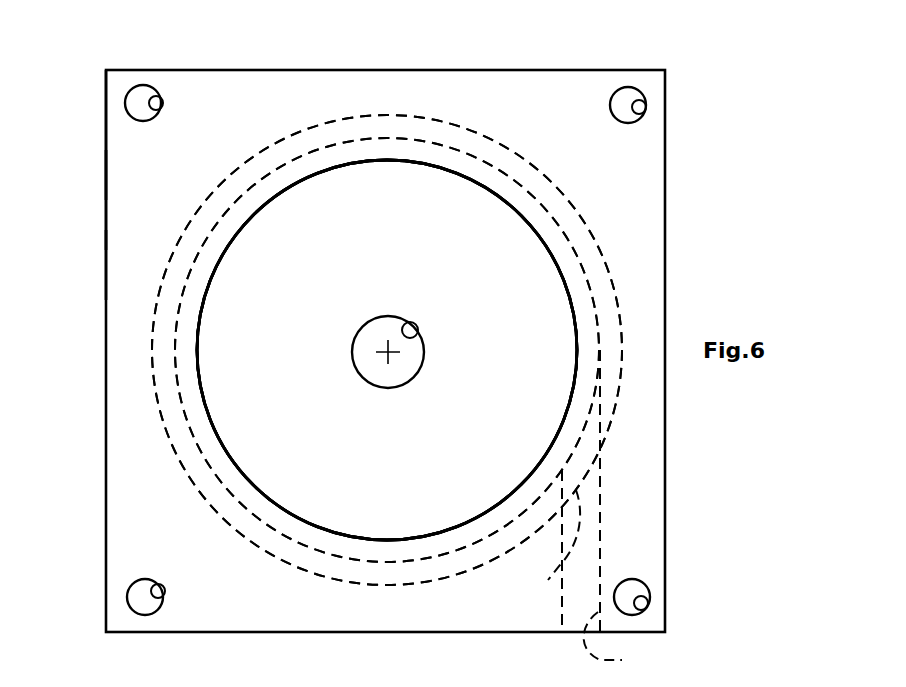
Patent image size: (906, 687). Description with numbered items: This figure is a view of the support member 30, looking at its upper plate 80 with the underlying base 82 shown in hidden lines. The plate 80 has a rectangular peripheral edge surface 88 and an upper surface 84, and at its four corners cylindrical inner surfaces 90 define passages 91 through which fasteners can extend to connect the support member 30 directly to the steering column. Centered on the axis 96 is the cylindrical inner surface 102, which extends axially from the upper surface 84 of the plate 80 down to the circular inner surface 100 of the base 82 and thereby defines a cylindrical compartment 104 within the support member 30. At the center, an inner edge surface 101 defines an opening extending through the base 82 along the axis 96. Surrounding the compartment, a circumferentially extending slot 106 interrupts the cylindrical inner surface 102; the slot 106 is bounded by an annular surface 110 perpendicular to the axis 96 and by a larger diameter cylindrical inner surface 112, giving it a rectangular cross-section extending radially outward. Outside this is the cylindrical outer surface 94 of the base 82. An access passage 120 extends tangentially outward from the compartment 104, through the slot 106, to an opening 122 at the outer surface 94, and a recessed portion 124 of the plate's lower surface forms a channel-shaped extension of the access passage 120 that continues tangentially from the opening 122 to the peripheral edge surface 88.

The support member 30 is at (178, 68).
The passages 91 is at (125, 103).
The cylindrical inner surfaces 90 is at (160, 100).
The plate 80 is at (135, 152).
The upper surface 84 is at (133, 199).
The rectangular peripheral edge surface 88 is at (106, 262).
The base 82 is at (152, 326).
The cylindrical outer surface 94 is at (153, 377).
The cylindrical inner surface 112 is at (207, 460).
The annular surface 110 is at (277, 525).
The cylindrical compartment 104 is at (335, 200).
The circular inner surface 100 is at (540, 283).
The cylindrical inner surface 102 is at (198, 353).
The slot 106 is at (355, 553).
The axis 96 is at (392, 356).
The inner edge surface 101 is at (406, 321).
The access passage 120 is at (578, 458).
The opening 122 is at (539, 549).
The recessed portion 124 is at (628, 644).